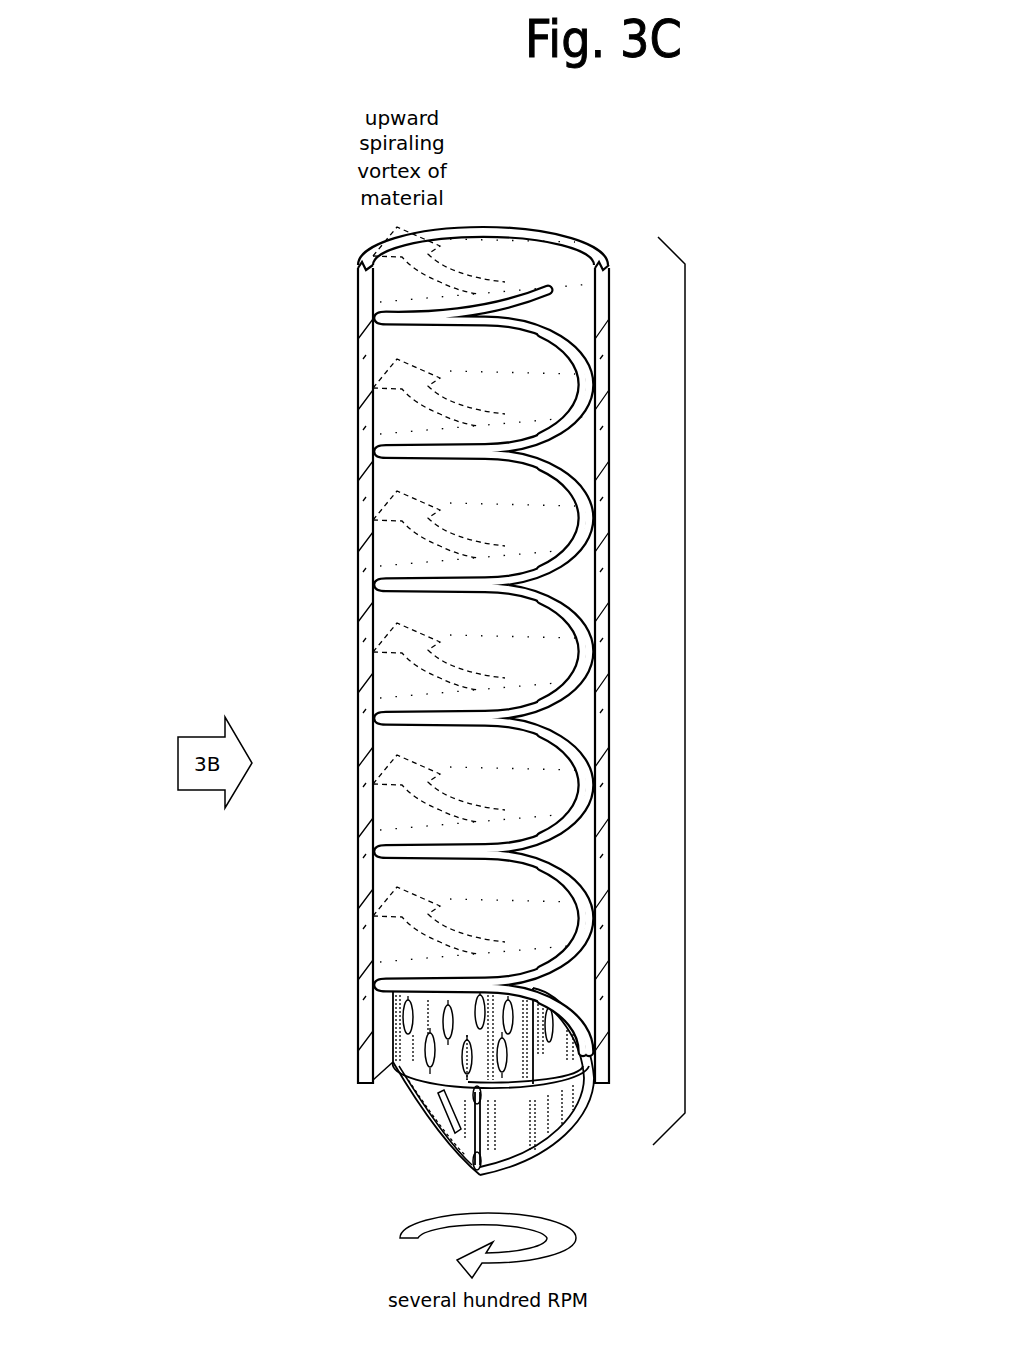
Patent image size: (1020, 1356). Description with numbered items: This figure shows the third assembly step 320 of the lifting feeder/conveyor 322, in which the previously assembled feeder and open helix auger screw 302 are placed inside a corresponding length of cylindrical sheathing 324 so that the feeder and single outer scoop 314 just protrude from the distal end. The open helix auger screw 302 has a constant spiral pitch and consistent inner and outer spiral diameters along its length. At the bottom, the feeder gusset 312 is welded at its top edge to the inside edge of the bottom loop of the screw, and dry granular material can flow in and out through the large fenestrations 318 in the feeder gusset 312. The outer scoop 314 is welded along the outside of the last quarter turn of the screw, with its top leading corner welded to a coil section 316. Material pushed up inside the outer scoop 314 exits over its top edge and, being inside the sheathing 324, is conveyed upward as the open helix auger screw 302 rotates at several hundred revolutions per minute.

The third assembly step 320 is at (118, 558).
The cylindrical sheathing 324 is at (353, 570).
The open helix auger screw 302 is at (566, 624).
The feeder/conveyor 322 is at (685, 648).
The fenestrations 318 is at (495, 1000).
The feeder gusset 312 is at (402, 1047).
The coil section 316 is at (440, 1094).
The outer scoop 314 is at (540, 1115).